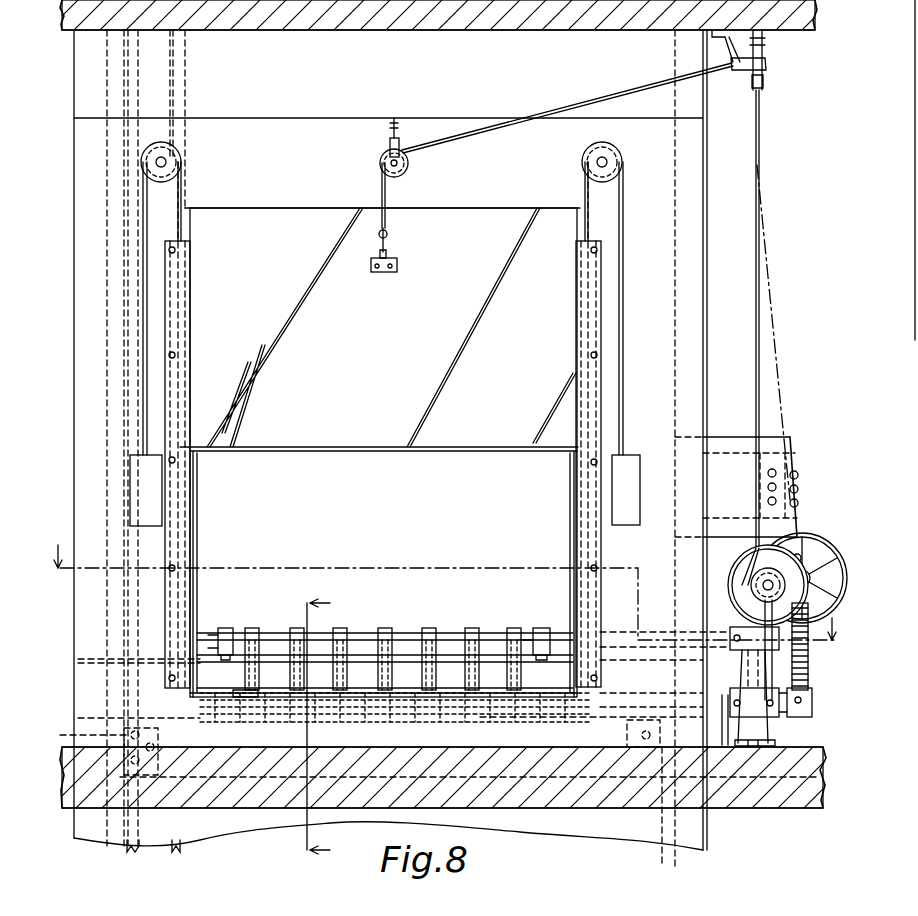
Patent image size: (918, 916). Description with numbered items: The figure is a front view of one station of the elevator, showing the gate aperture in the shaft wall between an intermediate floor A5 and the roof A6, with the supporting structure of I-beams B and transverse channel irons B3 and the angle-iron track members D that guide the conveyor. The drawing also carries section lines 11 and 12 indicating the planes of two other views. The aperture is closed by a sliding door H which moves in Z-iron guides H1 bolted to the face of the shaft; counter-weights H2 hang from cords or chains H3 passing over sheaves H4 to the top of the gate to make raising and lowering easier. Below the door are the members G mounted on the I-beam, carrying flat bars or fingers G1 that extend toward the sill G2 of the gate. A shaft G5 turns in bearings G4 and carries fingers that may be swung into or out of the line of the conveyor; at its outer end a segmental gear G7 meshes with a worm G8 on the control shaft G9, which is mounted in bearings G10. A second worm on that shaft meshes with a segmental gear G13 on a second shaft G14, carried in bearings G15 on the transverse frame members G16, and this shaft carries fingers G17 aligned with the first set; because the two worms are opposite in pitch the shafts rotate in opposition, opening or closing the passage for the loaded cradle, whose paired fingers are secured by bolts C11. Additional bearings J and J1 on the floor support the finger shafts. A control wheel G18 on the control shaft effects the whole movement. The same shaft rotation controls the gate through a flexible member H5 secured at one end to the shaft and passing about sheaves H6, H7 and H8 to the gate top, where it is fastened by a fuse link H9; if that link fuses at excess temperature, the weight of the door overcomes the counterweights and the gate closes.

The intermediate floor A5 is at (768, 793).
The roof A6 is at (382, 22).
The I-beam B is at (355, 777).
The transverse channel iron B3 is at (358, 810).
The bolt C11 is at (800, 462).
The guide or track member D is at (645, 845).
The member G is at (420, 718).
The flat bar or finger G1 is at (385, 680).
The sill G2 is at (243, 690).
The bearing G4 is at (385, 662).
The shaft G5 is at (725, 715).
The segmental gear G7 is at (770, 718).
The worm G8 is at (752, 598).
The shaft G9 is at (763, 584).
The bearing G10 is at (768, 562).
The segmental gear G13 is at (808, 672).
The shaft G14 is at (498, 637).
The bearing G15 is at (540, 630).
The transverse supporting frame member G16 is at (449, 655).
The finger G17 is at (428, 625).
The control wheel G18 is at (797, 556).
The sliding door H is at (345, 423).
The guide H1 is at (165, 290).
The counter-weight H2 is at (135, 472).
The cord or chain H3 is at (143, 247).
The sheave H4 is at (183, 160).
The flexible member H5 is at (388, 195).
The sheave H6 is at (766, 85).
The sheave H7 is at (760, 60).
The sheave H8 is at (410, 163).
The fuse link H9 is at (392, 236).
The bearing J is at (752, 722).
The bearing J1 is at (742, 650).
The section line 11 is at (447, 607).
The section line 12 is at (304, 731).